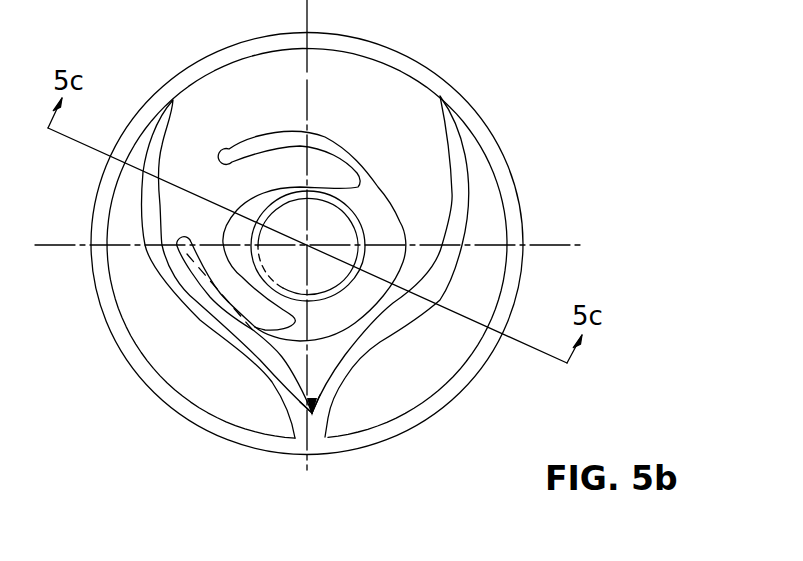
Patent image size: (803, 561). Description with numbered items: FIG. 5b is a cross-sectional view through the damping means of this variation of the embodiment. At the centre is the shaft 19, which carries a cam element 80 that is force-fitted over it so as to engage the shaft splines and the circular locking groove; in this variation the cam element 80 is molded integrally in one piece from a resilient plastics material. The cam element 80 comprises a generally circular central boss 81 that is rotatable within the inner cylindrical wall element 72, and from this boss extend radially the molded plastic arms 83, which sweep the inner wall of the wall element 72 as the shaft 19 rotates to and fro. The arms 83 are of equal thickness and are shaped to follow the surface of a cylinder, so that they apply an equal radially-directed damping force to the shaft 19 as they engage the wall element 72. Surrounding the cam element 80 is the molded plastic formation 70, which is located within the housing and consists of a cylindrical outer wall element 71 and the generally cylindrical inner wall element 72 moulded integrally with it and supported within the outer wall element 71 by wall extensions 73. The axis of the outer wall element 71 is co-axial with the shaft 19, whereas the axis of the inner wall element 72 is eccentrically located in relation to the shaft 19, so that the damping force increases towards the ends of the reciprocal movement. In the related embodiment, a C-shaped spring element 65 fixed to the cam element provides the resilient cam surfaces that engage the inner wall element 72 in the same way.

The shaft 19 is at (333, 220).
The spring element 65 is at (278, 132).
The molded plastic formation 70 is at (428, 446).
The cylindrical outer wall element 71 is at (168, 396).
The inner cylindrical wall element 72 is at (440, 97).
The wall extensions 73 is at (328, 410).
The cam element 80 is at (402, 203).
The central boss 81 is at (387, 230).
The molded plastic arms 83 is at (230, 143).